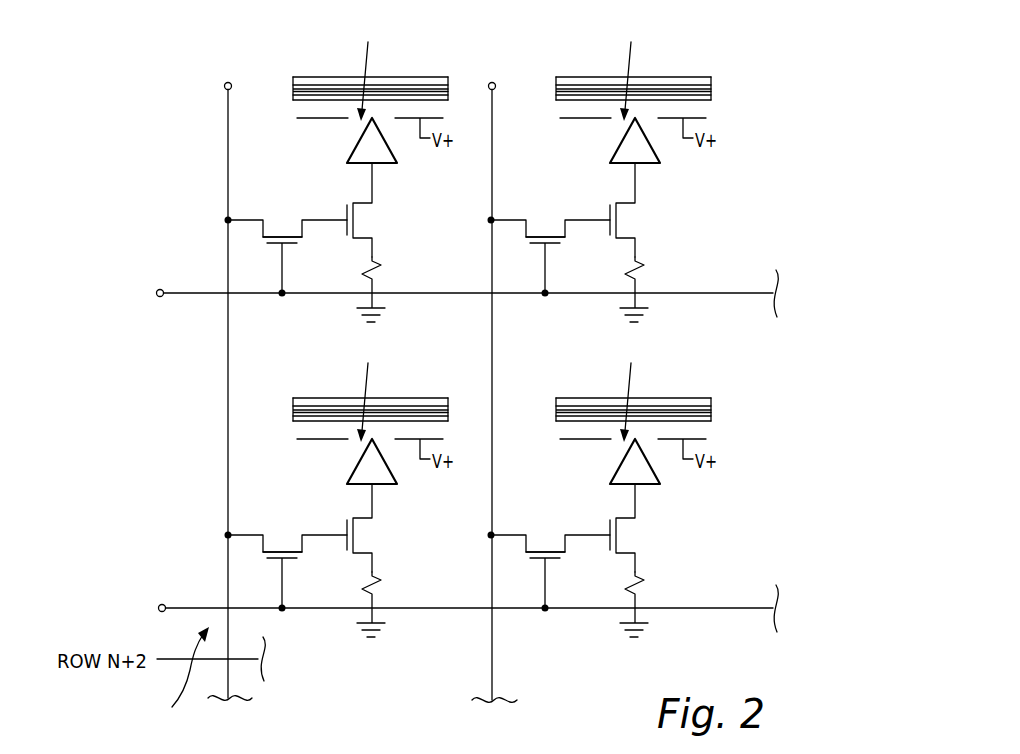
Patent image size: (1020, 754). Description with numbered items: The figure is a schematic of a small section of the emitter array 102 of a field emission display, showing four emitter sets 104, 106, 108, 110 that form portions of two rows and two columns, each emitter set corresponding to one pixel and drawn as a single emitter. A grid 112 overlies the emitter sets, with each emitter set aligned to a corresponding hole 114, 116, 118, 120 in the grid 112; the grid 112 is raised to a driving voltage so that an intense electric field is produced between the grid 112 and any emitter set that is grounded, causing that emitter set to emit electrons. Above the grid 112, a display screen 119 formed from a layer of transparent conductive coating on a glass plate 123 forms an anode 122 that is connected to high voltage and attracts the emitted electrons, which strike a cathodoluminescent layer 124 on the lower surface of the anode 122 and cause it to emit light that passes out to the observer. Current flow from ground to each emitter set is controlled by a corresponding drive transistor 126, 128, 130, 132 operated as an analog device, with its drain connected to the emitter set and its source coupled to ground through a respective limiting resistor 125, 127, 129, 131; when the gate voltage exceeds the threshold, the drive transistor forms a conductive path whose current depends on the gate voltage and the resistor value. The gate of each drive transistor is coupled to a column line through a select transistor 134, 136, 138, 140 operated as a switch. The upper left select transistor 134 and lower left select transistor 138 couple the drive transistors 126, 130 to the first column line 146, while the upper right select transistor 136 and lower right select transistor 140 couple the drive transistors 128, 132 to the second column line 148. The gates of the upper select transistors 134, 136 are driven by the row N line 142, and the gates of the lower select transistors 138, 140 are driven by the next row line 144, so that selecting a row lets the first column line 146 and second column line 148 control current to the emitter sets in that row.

The array 102 is at (172, 677).
The upper left emitter set 104 is at (346, 163).
The upper right emitter set 106 is at (606, 159).
The lower left emitter set 108 is at (343, 480).
The lower right emitter set 110 is at (606, 480).
The grid 112 is at (312, 119).
The hole 114 is at (374, 68).
The hole 116 is at (637, 68).
The hole 118 is at (374, 389).
The hole 120 is at (637, 389).
The display screen 119 is at (295, 87).
The anode 122 is at (328, 86).
The glass plate 123 is at (446, 86).
The cathodoluminescent layer 124 is at (298, 101).
The limiting resistor 125 is at (382, 270).
The upper left drive transistor 126 is at (374, 238).
The limiting resistor 127 is at (663, 289).
The upper right drive transistor 128 is at (654, 210).
The limiting resistor 129 is at (396, 604).
The lower left drive transistor 130 is at (391, 528).
The limiting resistor 131 is at (662, 604).
The lower right drive transistor 132 is at (655, 528).
The upper left select transistor 134 is at (303, 238).
The upper right select transistor 136 is at (563, 267).
The lower left select transistor 138 is at (300, 582).
The lower right select transistor 140 is at (563, 582).
The row N line 142 is at (205, 293).
The row N+1 line 144 is at (204, 608).
The column 1 line 146 is at (228, 177).
The column 2 line 148 is at (492, 175).